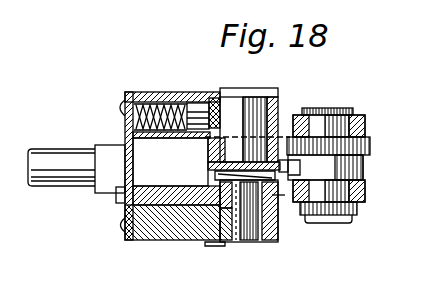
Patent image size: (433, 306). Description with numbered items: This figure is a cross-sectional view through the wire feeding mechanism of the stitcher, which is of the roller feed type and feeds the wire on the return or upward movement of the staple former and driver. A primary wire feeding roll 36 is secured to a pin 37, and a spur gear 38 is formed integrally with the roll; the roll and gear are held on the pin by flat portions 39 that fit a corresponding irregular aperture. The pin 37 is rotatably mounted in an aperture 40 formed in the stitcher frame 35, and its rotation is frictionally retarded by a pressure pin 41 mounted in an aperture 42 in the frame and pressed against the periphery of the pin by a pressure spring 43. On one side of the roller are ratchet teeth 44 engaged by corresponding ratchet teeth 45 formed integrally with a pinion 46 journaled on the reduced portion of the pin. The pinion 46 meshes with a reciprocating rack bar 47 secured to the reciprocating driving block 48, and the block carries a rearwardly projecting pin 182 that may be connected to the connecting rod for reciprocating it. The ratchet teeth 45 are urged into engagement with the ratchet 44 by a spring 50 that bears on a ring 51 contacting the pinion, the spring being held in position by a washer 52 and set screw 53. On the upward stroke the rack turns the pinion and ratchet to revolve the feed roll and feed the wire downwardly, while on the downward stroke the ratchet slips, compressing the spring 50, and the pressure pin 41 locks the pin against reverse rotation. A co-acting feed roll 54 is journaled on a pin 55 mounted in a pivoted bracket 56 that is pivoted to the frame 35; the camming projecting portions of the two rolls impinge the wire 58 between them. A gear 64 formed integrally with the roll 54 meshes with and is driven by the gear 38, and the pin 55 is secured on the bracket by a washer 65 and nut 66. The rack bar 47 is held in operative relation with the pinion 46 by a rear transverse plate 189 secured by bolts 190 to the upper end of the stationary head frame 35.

The stitcher frame 35 is at (153, 92).
The primary wire feeding roll 36 is at (190, 238).
The pin 37 is at (266, 122).
The spur gear 38 is at (212, 157).
The flat portions 39 is at (293, 120).
The aperture 40 is at (224, 84).
The pressure pin 41 is at (192, 102).
The aperture 42 is at (136, 96).
The pressure spring 43 is at (122, 104).
The ratchet teeth 44 is at (276, 205).
The ratchet teeth 45 is at (243, 242).
The pinion 46 is at (212, 246).
The reciprocating rack bar 47 is at (171, 191).
The reciprocating driving block 48 is at (100, 147).
The spring 50 is at (272, 242).
The ring 51 is at (278, 197).
The washer 52 is at (226, 246).
The set screw 53 is at (258, 245).
The co-acting feed roll 54 is at (364, 166).
The pin 55 is at (350, 110).
The pivoted bracket 56 is at (365, 128).
The wire 58 is at (292, 168).
The gear 64 is at (413, 152).
The washer 65 is at (358, 207).
The nut 66 is at (353, 220).
The rearwardly projecting pin 182 is at (65, 181).
The rear transverse plate 189 is at (125, 133).
The bolts 190 is at (118, 226).